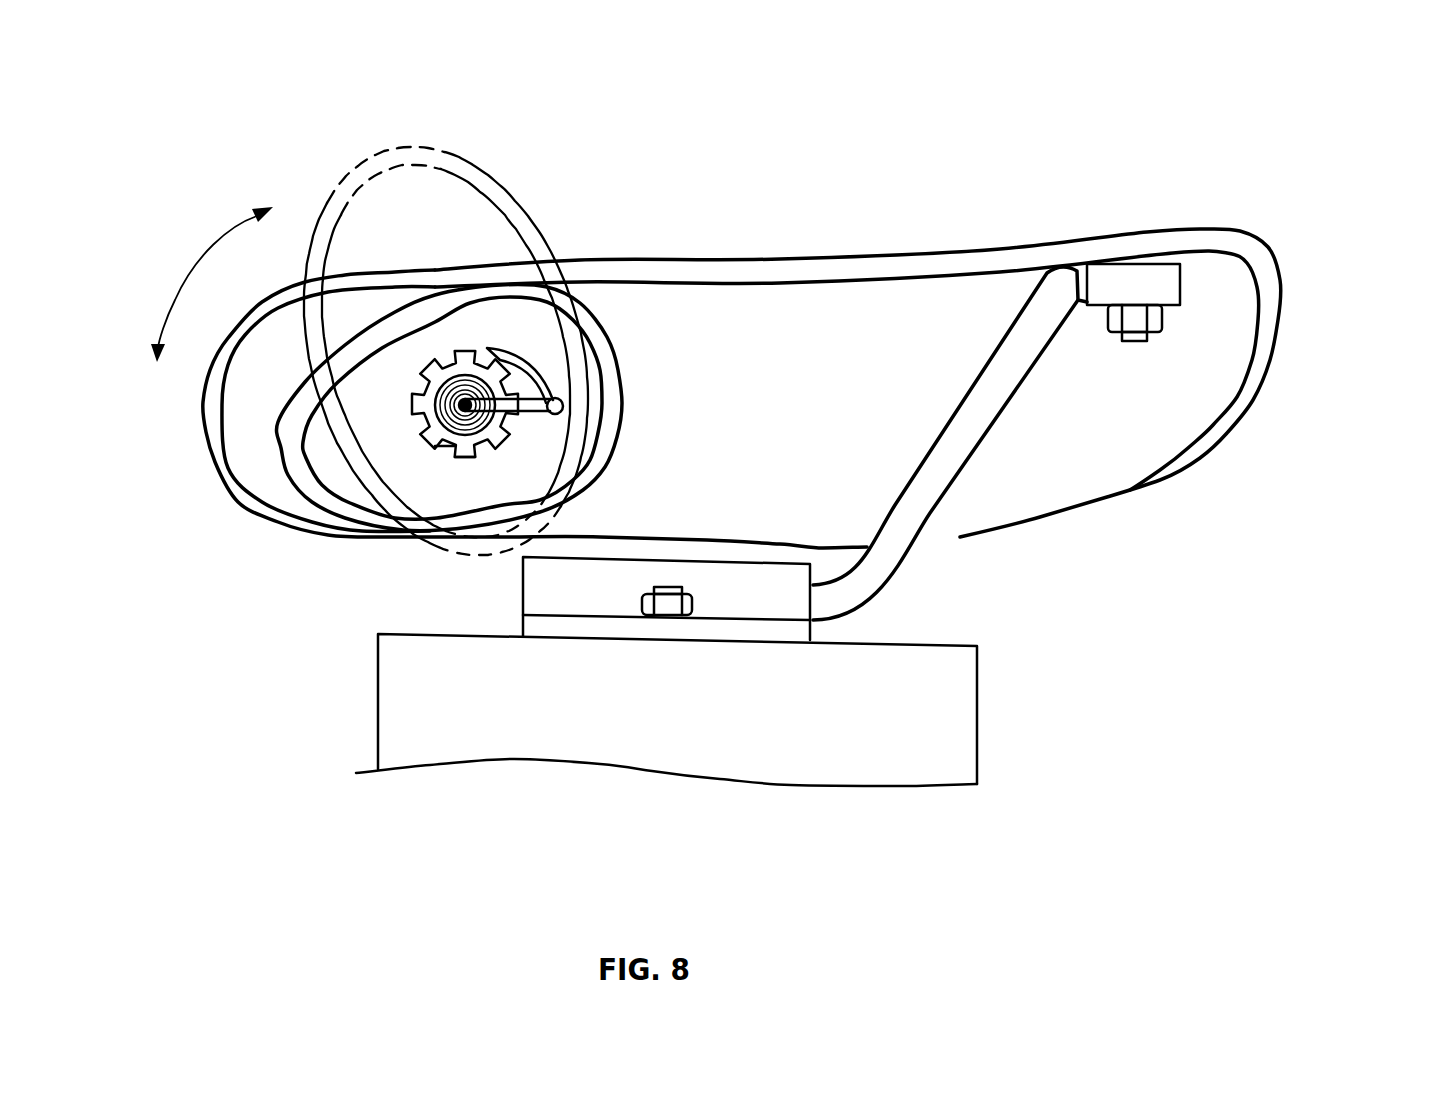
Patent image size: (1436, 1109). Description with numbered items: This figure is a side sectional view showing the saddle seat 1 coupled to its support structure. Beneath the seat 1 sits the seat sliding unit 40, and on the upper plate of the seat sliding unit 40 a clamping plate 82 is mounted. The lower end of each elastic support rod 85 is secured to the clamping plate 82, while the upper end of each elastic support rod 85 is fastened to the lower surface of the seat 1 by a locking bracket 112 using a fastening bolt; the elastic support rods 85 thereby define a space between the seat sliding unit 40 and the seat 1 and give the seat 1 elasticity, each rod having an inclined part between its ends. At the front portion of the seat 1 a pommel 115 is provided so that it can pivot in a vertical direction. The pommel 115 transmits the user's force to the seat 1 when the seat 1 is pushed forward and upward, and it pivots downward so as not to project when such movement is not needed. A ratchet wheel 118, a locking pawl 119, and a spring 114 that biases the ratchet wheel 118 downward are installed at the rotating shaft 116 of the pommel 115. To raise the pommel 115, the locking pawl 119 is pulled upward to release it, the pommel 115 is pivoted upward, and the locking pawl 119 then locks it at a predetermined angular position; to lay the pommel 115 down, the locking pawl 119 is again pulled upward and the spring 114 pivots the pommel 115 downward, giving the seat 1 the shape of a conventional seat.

The seat 1 is at (897, 262).
The seat sliding unit 40 is at (935, 726).
The clamping plate 82 is at (548, 583).
The elastic support rod 85 is at (980, 430).
The locking bracket 112 is at (1207, 288).
The spring 114 is at (463, 456).
The pommel 115 is at (322, 198).
The rotating shaft 116 is at (445, 447).
The ratchet wheel 118 is at (413, 399).
The locking pawl 119 is at (517, 347).